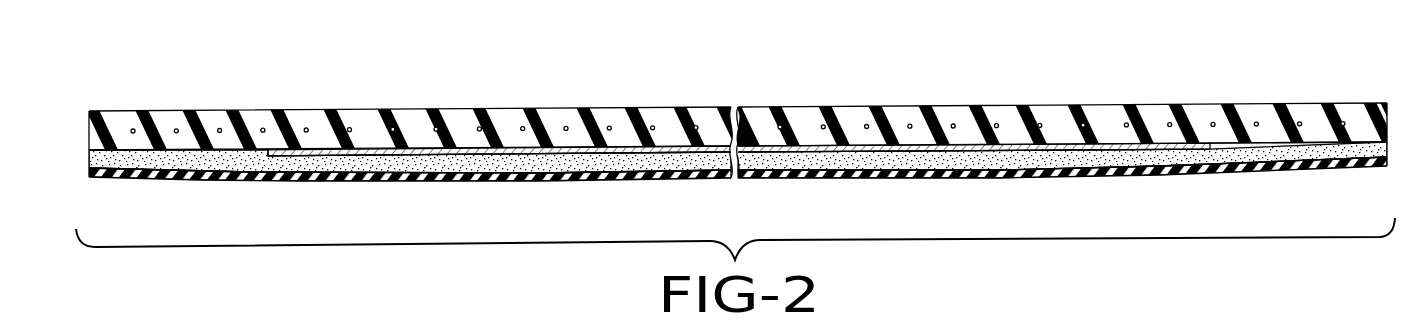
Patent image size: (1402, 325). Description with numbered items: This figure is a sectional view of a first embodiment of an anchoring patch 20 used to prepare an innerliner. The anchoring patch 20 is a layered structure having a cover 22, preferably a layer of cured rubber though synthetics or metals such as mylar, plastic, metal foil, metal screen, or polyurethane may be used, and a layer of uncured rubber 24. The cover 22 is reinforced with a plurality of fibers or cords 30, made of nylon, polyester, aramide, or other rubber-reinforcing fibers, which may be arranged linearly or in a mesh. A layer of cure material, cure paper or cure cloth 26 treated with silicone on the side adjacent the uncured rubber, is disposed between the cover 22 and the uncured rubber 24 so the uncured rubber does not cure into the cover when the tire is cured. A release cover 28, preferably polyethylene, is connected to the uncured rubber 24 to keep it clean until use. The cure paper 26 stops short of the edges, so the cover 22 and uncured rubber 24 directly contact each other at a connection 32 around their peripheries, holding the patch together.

The anchoring patch 20 is at (300, 73).
The cover 22 is at (358, 120).
The layer of uncured rubber 24 is at (930, 160).
The cure paper 26 is at (972, 145).
The release cover 28 is at (1063, 172).
The reinforcing cords 30 is at (563, 130).
The connection 32 is at (125, 150).